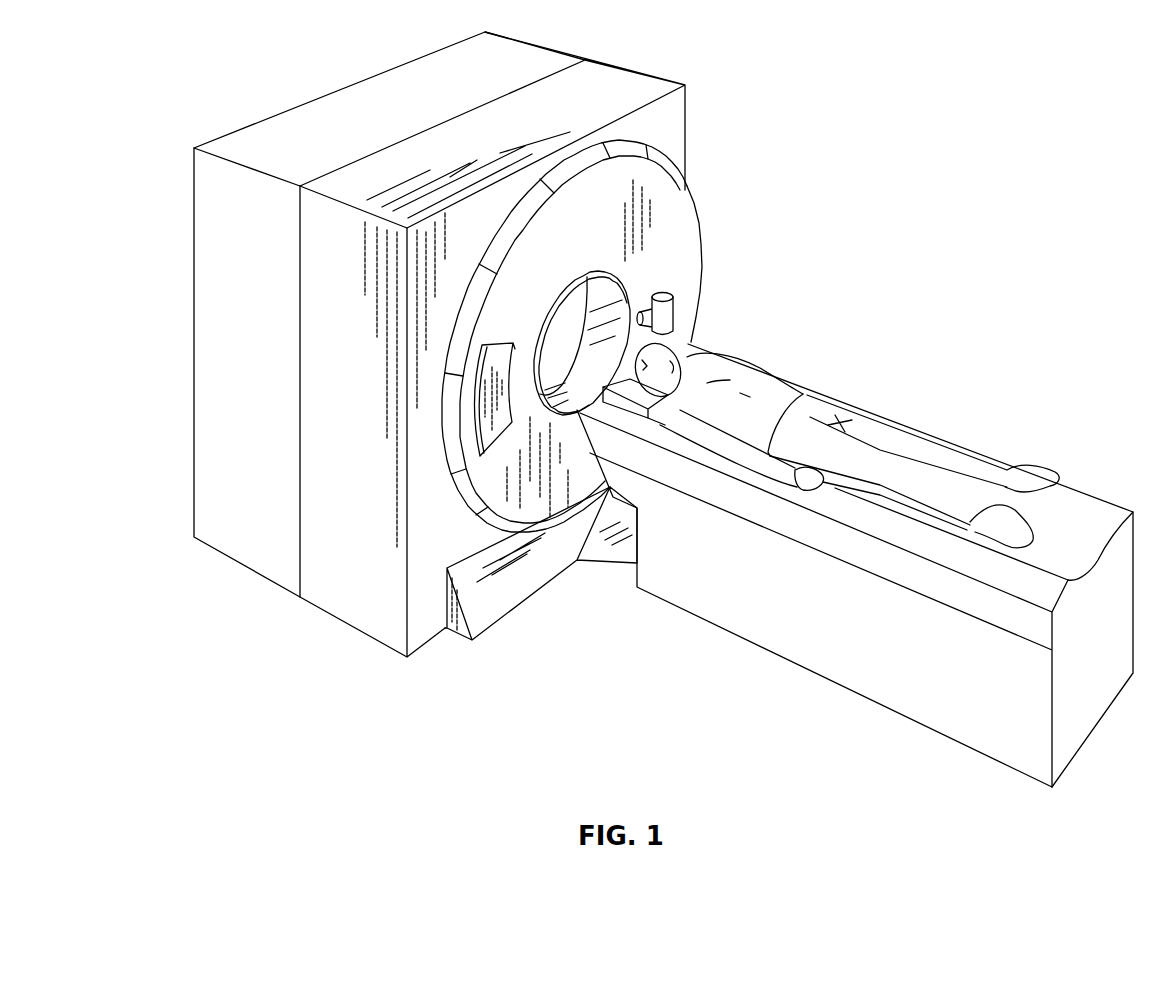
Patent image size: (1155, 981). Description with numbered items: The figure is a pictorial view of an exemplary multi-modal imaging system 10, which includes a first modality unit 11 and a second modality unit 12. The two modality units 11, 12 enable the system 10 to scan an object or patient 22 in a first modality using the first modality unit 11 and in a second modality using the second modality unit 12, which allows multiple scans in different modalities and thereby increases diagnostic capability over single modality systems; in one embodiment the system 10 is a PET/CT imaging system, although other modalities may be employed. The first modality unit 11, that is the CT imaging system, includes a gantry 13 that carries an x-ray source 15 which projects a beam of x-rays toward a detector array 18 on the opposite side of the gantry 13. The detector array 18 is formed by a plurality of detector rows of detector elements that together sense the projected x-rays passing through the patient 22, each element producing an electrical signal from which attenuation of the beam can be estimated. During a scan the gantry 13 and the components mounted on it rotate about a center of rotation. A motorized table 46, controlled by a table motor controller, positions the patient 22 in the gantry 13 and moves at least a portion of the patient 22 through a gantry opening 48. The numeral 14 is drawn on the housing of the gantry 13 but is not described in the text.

The multi-modal imaging system 10 is at (614, 580).
The first modality unit 11 is at (343, 603).
The second modality unit 12 is at (243, 552).
The gantry 13 is at (677, 124).
The gantry top cover 14 is at (243, 136).
The x-ray source 15 is at (673, 313).
The detector array 18 is at (492, 437).
The patient 22 is at (757, 393).
The motorized table 46 is at (781, 638).
The gantry opening 48 is at (585, 282).